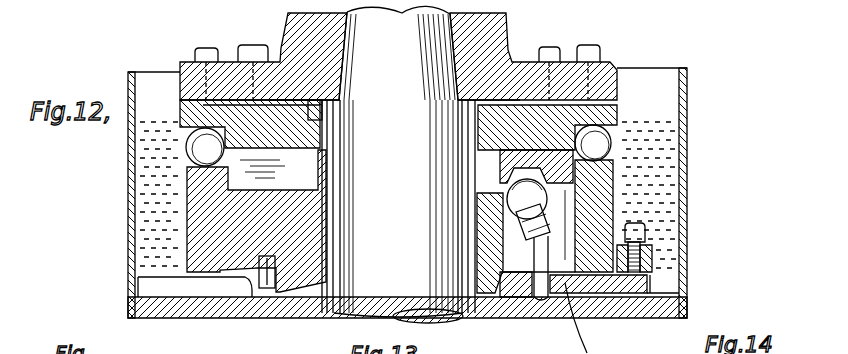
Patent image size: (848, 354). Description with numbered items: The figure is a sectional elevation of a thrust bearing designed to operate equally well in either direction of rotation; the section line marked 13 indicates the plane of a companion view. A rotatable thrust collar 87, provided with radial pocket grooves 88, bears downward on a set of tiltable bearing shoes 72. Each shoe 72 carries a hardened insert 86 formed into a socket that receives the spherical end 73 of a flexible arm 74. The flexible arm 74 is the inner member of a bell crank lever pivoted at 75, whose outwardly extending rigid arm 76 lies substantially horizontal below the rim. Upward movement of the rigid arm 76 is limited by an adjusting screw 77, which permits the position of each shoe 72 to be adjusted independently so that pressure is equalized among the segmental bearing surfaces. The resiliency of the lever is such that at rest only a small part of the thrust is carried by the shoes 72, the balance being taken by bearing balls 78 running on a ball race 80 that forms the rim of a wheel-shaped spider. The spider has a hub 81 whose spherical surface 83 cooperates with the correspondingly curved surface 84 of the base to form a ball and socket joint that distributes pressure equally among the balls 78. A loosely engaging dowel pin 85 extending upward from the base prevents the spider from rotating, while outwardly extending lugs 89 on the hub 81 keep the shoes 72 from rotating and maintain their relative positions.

The tiltable bearing shoe 72 is at (490, 170).
The spherical end 73 is at (512, 202).
The flexible arm 74 is at (510, 252).
The pivot 75 is at (542, 293).
The rigid arm 76 is at (603, 293).
The adjusting screw 77 is at (646, 232).
The bearing balls 78 is at (615, 152).
The ball race 80 is at (612, 195).
The hub 81 is at (490, 228).
The spherical surface 83 is at (485, 270).
The curved surface 84 is at (503, 277).
The dowel pin 85 is at (260, 290).
The hardened insert 86 is at (505, 183).
The rotatable thrust collar 87 is at (618, 105).
The radial pocket grooves 88 is at (320, 150).
The lugs 89 is at (308, 180).
The section line 13- 13 is at (101, 155).